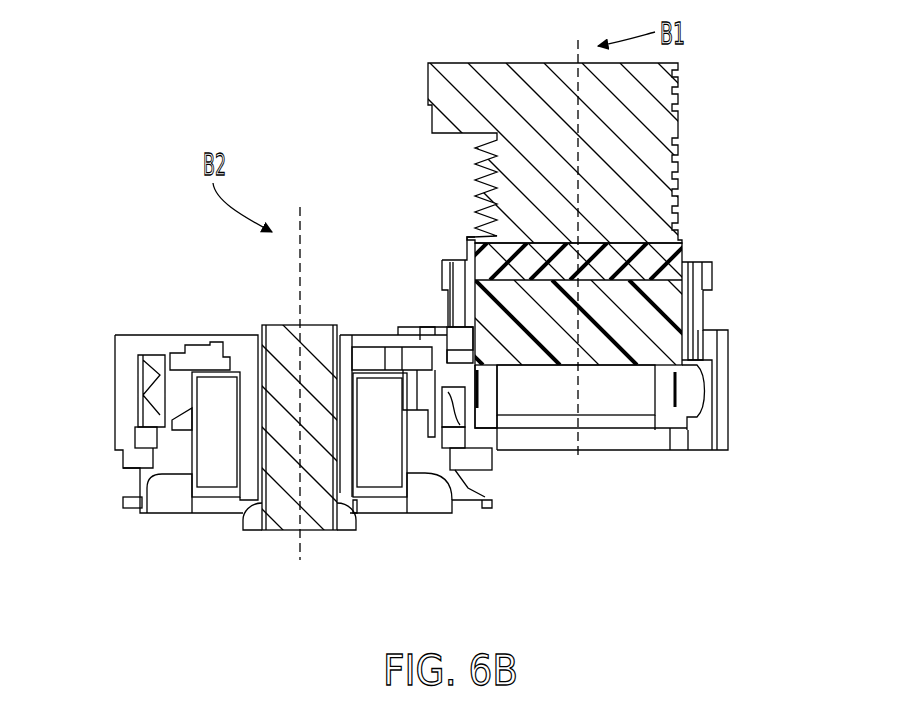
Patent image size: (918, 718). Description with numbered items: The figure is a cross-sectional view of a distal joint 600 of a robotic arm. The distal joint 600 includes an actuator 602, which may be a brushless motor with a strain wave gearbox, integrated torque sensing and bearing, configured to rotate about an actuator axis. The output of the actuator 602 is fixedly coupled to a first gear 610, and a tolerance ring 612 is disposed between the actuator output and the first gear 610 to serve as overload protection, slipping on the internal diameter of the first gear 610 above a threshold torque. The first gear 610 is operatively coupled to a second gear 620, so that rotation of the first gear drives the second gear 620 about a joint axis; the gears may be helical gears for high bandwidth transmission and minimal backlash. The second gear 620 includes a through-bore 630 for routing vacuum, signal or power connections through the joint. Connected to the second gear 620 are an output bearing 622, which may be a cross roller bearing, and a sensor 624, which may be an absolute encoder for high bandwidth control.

The distal joint 600 is at (112, 135).
The actuator 602 is at (685, 182).
The first gear 610 is at (705, 388).
The tolerance ring 612 is at (677, 405).
The second gear 620 is at (445, 388).
The output bearing 622 is at (450, 450).
The sensor 624 is at (192, 307).
The through-bore 630 is at (317, 307).